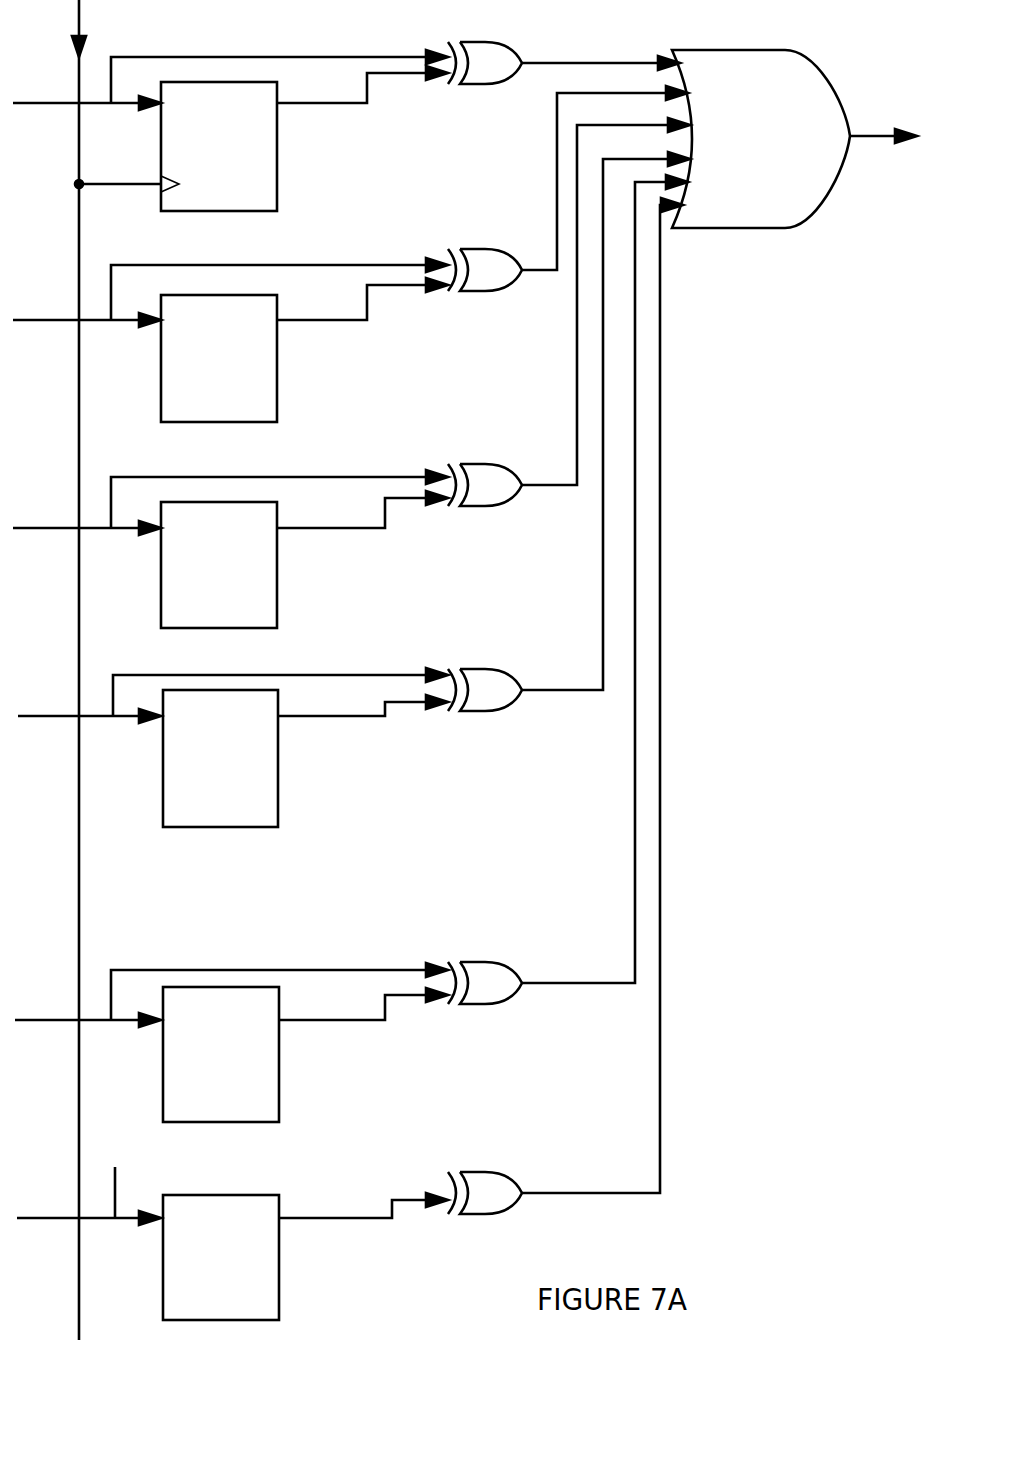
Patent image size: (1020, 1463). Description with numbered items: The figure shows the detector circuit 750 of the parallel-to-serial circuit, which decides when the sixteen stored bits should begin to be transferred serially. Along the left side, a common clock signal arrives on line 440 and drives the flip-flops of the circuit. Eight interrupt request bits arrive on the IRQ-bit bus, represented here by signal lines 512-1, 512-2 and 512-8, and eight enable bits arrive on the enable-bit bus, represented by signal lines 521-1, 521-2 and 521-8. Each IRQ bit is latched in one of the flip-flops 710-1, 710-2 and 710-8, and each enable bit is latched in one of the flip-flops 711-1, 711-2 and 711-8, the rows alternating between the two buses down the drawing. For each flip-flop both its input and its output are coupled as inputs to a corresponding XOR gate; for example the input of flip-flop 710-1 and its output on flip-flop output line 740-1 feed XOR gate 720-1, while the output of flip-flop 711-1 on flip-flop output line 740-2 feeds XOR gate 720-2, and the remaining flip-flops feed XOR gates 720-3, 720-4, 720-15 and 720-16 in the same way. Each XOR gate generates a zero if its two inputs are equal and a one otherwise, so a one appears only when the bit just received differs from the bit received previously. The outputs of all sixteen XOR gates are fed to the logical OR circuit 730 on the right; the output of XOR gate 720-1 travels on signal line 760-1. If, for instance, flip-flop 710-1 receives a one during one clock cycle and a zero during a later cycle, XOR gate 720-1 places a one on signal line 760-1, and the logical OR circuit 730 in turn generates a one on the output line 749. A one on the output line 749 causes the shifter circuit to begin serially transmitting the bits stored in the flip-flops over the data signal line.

The line 440 is at (79, 17).
The IRQ-bit bus signal line 512-1 is at (230, 80).
The enable-bit bus signal line 521-1 is at (230, 292).
The IRQ-bit bus signal line 512-2 is at (230, 502).
The enable-bit bus signal line 521-2 is at (233, 695).
The IRQ-bit bus signal line 512-8 is at (231, 995).
The enable-bit bus signal line 521-8 is at (89, 1196).
The flip-flop 710-1 is at (277, 157).
The flip-flop 710-2 is at (277, 573).
The flip-flop 710-8 is at (278, 1075).
The flip-flop 711-1 is at (277, 367).
The flip-flop 711-2 is at (278, 772).
The flip-flop 711-8 is at (278, 1273).
The XOR gate 720-1 is at (478, 42).
The XOR gate 720-2 is at (476, 249).
The XOR gate 720-3 is at (483, 464).
The XOR gate 720-4 is at (485, 669).
The XOR gate 720-15 is at (485, 962).
The XOR gate 720-16 is at (483, 1172).
The flip-flop output line 740-1 is at (368, 83).
The flip-flop output line 740-2 is at (368, 293).
The signal line 760-1 is at (570, 63).
The logical OR circuit 730 is at (727, 50).
The output line 749 is at (866, 136).
The detector circuit 750 is at (466, 670).